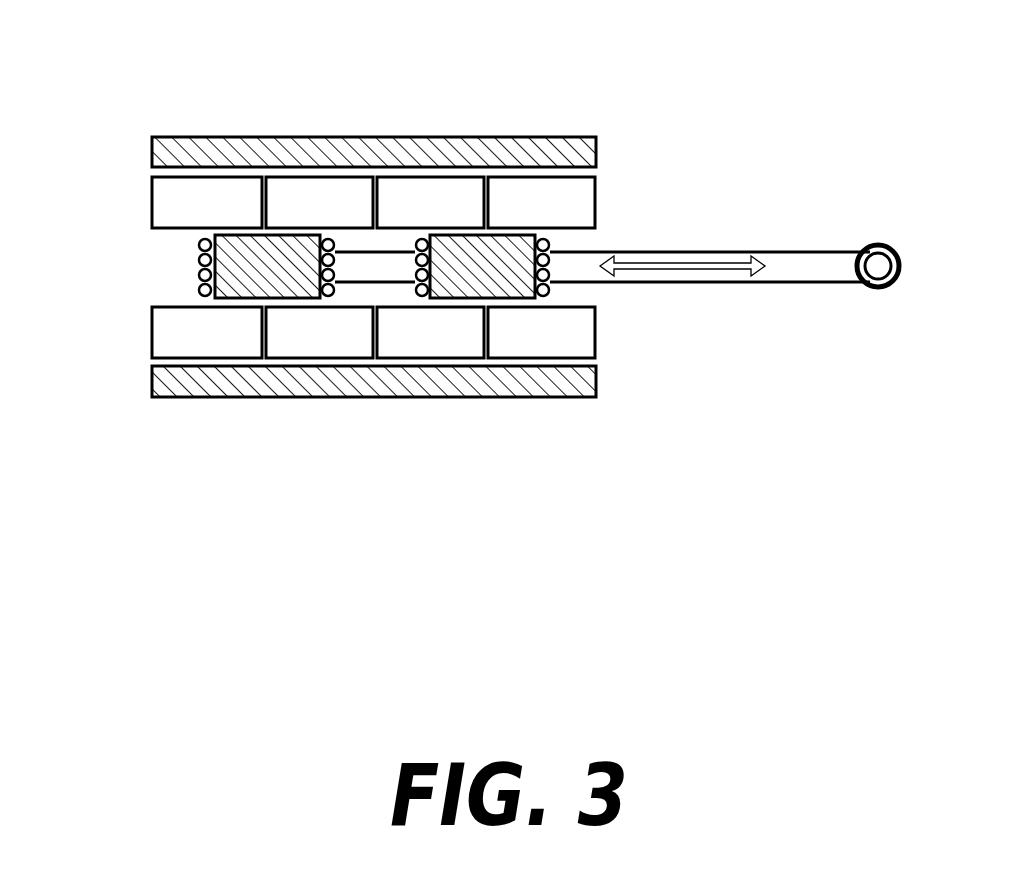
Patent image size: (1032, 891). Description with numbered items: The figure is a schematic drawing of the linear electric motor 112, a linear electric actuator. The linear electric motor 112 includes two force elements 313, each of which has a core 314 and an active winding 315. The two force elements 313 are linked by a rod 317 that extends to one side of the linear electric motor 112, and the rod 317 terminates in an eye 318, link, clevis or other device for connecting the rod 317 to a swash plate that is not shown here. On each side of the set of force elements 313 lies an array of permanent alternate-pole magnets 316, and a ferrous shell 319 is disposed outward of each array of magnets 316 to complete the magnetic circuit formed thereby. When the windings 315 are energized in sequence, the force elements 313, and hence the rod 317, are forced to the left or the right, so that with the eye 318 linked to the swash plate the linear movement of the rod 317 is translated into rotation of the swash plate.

The linear electric motor 112 is at (459, 453).
The force element 313 is at (180, 272).
The core 314 is at (202, 290).
The active winding 315 is at (202, 245).
The permanent alternate-pole magnets 316 is at (157, 192).
The rod 317 is at (687, 283).
The eye 318 is at (877, 290).
The ferrous shell 319 is at (155, 137).